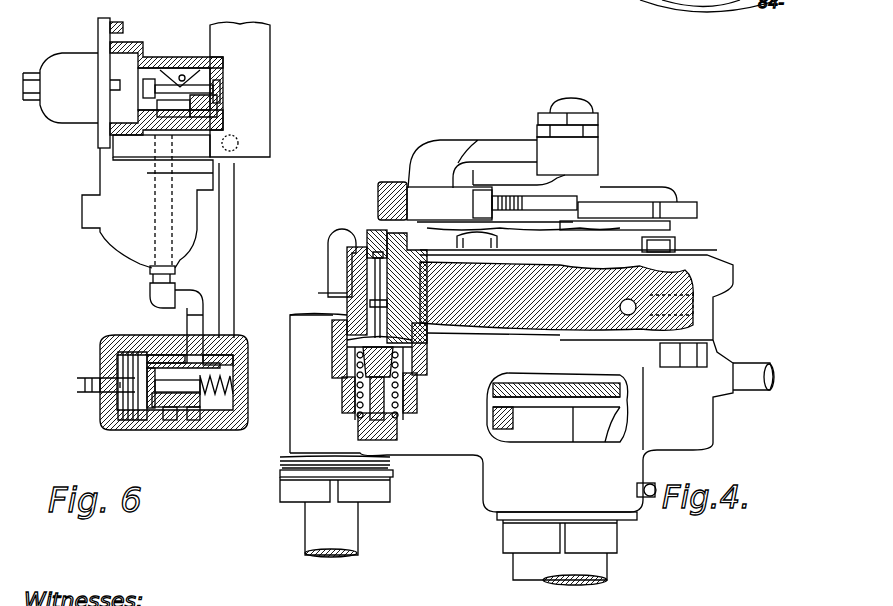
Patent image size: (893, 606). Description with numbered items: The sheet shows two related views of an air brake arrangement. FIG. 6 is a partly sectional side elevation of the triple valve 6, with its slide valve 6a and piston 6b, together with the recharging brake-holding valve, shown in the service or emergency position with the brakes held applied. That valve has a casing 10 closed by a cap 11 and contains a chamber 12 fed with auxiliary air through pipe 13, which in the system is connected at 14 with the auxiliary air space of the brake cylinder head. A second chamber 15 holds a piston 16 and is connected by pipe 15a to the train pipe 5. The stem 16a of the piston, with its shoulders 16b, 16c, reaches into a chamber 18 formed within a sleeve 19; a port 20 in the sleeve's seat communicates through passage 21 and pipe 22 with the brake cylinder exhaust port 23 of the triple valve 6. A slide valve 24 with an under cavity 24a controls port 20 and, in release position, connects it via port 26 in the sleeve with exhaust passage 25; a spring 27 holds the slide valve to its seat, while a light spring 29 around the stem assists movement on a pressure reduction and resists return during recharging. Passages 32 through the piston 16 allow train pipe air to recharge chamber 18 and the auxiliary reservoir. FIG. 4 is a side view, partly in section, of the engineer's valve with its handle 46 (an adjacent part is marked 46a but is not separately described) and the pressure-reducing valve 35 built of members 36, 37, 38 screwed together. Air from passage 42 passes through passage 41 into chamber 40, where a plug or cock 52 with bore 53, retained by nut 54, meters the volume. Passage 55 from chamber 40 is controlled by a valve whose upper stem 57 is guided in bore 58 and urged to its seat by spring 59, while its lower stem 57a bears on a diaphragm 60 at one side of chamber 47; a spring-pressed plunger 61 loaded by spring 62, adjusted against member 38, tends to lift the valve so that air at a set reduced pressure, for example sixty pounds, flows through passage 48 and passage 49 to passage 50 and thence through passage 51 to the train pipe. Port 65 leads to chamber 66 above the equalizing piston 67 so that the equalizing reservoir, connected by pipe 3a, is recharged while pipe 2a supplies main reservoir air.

In FIG. 4, the pipe 2a is at (365, 530).
In FIG. 4, the pipe 3a is at (753, 382).
In FIG. 4, the train pipe 5 is at (335, 290).
In FIG. 6, the triple valve 6 is at (192, 57).
In FIG. 6, the slide valve of the triple valve 6a is at (228, 107).
In FIG. 6, the piston of the triple valve 6b is at (110, 80).
In FIG. 6, the casing 10 is at (243, 432).
In FIG. 6, the cap 11 is at (120, 342).
In FIG. 6, the chamber 12 is at (240, 357).
In FIG. 6, the pipe 13 is at (245, 250).
In FIG. 6, the connection 14 is at (250, 143).
In FIG. 6, the chamber 15 is at (100, 345).
In FIG. 6, the pipe 15a is at (77, 385).
In FIG. 6, the piston 16 is at (107, 363).
In FIG. 6, the stem 16a is at (150, 350).
In FIG. 6, the shoulder 16b is at (110, 432).
In FIG. 6, the shoulder or projection 16c is at (240, 348).
In FIG. 6, the chamber 18 is at (206, 339).
In FIG. 6, the sleeve 19 is at (233, 420).
In FIG. 6, the port 20 is at (185, 430).
In FIG. 6, the passage 21 is at (210, 430).
In FIG. 6, the pipe 22 is at (151, 292).
In FIG. 6, the brake cylinder exhaust port 23 is at (163, 60).
In FIG. 6, the slide valve 24 is at (217, 402).
In FIG. 6, the cavity 24a is at (163, 433).
In FIG. 6, the exhaust passage 25 is at (168, 430).
In FIG. 6, the port 26 is at (185, 430).
In FIG. 6, the spring 27 is at (168, 356).
In FIG. 6, the spring 29 is at (232, 372).
In FIG. 6, the passage 32 is at (107, 398).
In FIG. 4, the pressure-reducing valve 35 is at (420, 345).
In FIG. 4, the member 36 is at (346, 285).
In FIG. 4, the member 37 is at (342, 398).
In FIG. 4, the member 38 is at (358, 430).
In FIG. 4, the chamber 40 is at (330, 268).
In FIG. 4, the passage 41 is at (407, 285).
In FIG. 4, the passage 42 is at (595, 192).
In FIG. 4, the engineer's handle 46 is at (498, 140).
In FIG. 4, the arm end 46a is at (463, 200).
In FIG. 4, the chamber 47 is at (332, 345).
In FIG. 4, the passage 48 is at (545, 335).
In FIG. 4, the passage 49 is at (580, 330).
In FIG. 4, the passage 50 is at (610, 333).
In FIG. 4, the passage 51 is at (697, 310).
In FIG. 4, the plug or cock 52 is at (338, 233).
In FIG. 4, the bore 53 is at (500, 335).
In FIG. 4, the nut 54 is at (374, 230).
In FIG. 4, the passage 55 is at (333, 333).
In FIG. 4, the upper stem 57 is at (330, 260).
In FIG. 4, the stem 57a is at (412, 392).
In FIG. 4, the bore 58 is at (358, 235).
In FIG. 4, the spring 59 is at (345, 272).
In FIG. 4, the diaphragm 60 is at (333, 370).
In FIG. 4, the spring-pressed plunger 61 is at (413, 372).
In FIG. 4, the spring 62 is at (403, 417).
In FIG. 4, the port 65 is at (597, 320).
In FIG. 4, the chamber 66 is at (618, 377).
In FIG. 4, the equalizing piston 67 is at (627, 403).